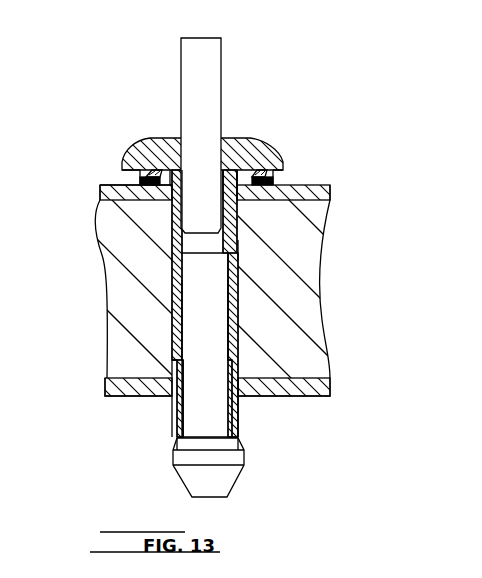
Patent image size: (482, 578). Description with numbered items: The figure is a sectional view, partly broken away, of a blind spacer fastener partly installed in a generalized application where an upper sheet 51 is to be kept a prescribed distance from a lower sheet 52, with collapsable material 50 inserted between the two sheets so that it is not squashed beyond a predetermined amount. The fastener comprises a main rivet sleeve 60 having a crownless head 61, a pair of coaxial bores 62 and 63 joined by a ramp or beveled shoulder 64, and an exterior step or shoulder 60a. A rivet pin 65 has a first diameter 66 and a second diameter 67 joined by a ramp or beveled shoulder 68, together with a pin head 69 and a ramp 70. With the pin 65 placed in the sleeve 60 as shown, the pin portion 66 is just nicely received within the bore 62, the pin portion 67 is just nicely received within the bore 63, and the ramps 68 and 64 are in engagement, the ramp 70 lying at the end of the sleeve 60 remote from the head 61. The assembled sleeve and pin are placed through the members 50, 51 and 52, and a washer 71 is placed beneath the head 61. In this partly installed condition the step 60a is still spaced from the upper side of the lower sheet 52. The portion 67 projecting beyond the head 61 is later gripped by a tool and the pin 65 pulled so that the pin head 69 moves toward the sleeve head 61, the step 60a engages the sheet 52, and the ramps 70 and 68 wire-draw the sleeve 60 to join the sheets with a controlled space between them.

The collapsable material 50 is at (118, 290).
The upper sheet 51 is at (108, 188).
The lower sheet 52 is at (123, 388).
The main rivet sleeve 60 is at (176, 413).
The exterior step 60a is at (256, 397).
The crownless head 61 is at (142, 145).
The first sleeve bore 62 is at (178, 313).
The second sleeve bore 63 is at (233, 212).
The beveled shoulder 64 is at (180, 249).
The rivet pin 65 is at (218, 360).
The first diameter portion 66 is at (243, 315).
The second diameter portion 67 is at (217, 110).
The pin beveled shoulder 68 is at (242, 247).
The pin head 69 is at (185, 455).
The pin ramp 70 is at (237, 442).
The washer 71 is at (270, 181).